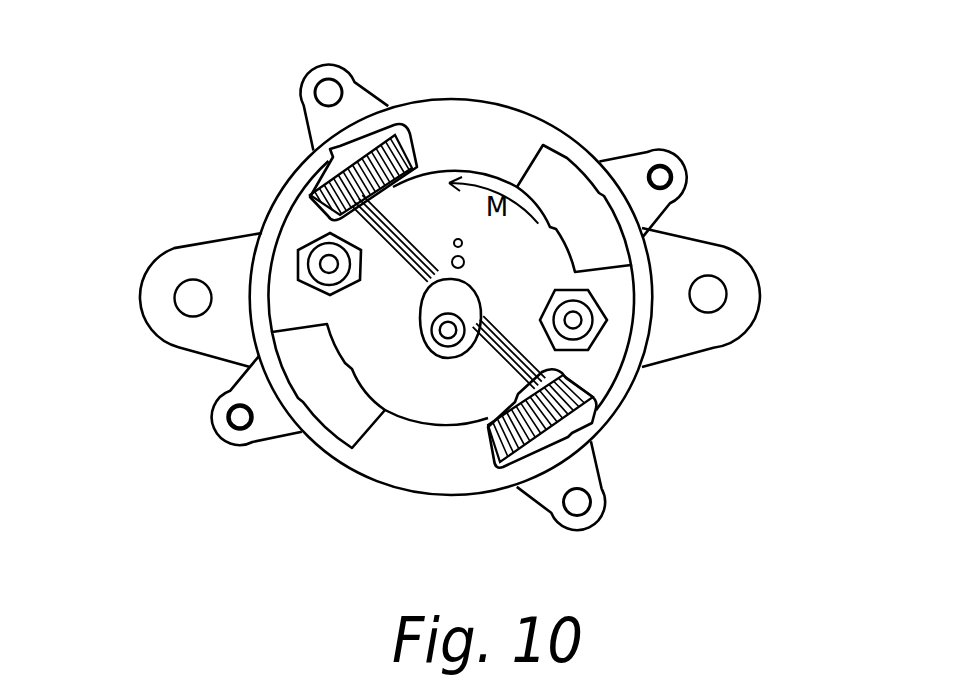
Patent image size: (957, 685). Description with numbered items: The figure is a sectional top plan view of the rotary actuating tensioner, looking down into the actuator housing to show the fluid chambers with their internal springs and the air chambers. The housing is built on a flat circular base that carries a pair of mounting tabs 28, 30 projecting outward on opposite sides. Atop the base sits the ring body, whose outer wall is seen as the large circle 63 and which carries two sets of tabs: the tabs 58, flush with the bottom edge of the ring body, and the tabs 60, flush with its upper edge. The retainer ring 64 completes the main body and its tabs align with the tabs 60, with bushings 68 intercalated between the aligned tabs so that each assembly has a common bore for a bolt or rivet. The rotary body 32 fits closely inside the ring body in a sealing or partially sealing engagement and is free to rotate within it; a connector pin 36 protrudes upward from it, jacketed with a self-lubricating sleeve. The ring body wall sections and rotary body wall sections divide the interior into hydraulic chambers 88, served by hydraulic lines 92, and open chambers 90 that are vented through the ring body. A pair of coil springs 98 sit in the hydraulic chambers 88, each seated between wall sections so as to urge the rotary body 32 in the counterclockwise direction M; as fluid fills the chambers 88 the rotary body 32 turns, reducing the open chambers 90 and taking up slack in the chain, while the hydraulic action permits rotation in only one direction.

The mounting tab 28 is at (738, 270).
The mounting tab 30 is at (152, 306).
The rotary body 32 is at (419, 391).
The connector pin 36 is at (332, 268).
The tabs 58 is at (642, 163).
The tabs 60 is at (315, 128).
The housing ring 63 is at (262, 290).
The retainer ring 64 is at (640, 287).
The bushing 68 is at (313, 76).
The hydraulic chamber 88 is at (383, 138).
The open chamber 90 is at (565, 183).
The hydraulic line 92 is at (390, 243).
The coil spring 98 is at (325, 187).